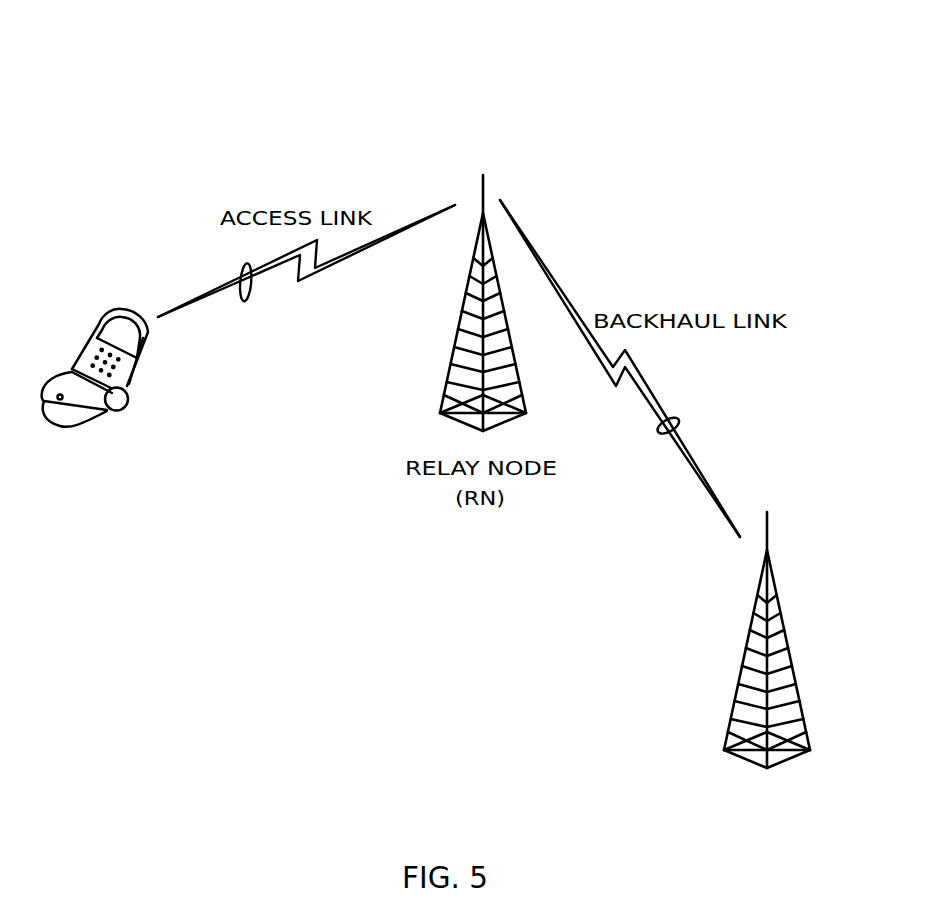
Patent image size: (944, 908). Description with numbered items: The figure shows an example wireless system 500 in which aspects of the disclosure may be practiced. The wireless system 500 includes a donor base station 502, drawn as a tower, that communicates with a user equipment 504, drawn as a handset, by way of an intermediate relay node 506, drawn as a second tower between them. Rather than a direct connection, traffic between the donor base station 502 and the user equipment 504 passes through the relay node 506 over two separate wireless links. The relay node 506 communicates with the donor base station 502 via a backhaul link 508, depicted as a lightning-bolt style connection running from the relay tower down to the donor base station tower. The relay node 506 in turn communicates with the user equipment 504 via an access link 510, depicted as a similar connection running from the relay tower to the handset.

The wireless system 500 is at (124, 61).
The donor base station 502 is at (790, 657).
The user equipment 504 is at (94, 334).
The relay node 506 is at (459, 322).
The backhaul link 508 is at (660, 437).
The access link 510 is at (246, 302).